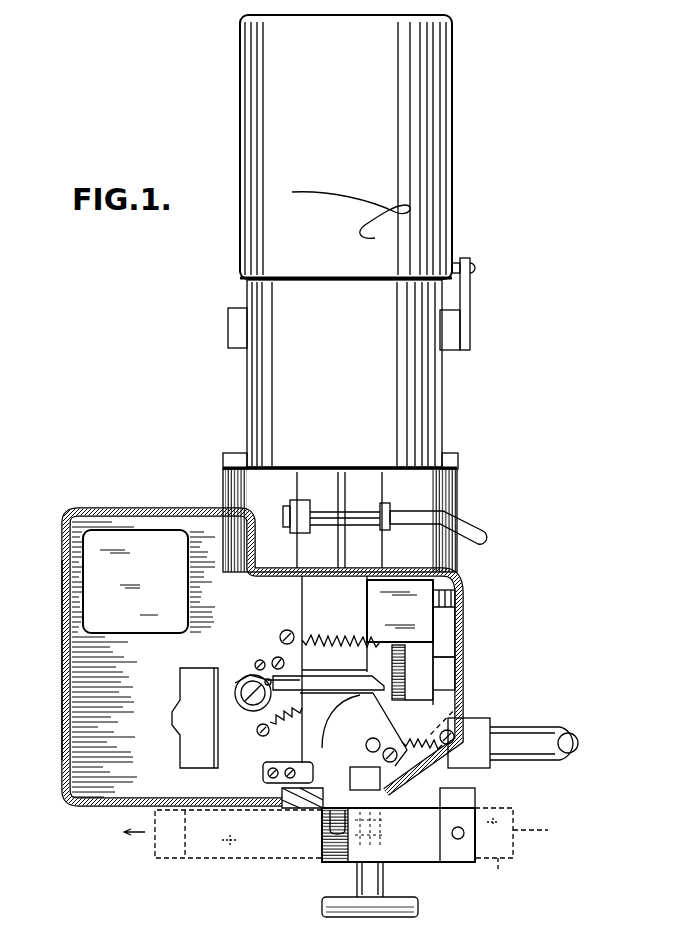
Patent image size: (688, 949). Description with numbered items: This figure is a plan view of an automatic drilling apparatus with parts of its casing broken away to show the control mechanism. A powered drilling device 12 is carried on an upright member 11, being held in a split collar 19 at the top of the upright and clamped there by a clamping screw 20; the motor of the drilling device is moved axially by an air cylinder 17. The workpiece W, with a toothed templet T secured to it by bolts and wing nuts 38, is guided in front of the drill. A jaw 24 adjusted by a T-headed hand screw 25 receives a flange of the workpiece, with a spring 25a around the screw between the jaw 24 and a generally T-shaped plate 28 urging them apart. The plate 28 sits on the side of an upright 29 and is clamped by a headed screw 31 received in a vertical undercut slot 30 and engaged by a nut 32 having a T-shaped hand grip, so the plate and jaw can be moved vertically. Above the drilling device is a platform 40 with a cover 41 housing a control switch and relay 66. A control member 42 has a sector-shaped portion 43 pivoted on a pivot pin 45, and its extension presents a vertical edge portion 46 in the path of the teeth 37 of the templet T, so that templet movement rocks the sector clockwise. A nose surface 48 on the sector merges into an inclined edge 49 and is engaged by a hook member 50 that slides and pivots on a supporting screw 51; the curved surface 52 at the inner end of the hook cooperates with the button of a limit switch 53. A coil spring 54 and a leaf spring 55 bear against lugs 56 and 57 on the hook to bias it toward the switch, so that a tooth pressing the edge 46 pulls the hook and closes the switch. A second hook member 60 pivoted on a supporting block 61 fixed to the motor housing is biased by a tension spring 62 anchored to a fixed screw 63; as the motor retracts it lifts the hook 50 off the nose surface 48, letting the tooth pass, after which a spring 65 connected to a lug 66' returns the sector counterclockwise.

The upright member 11 is at (457, 490).
The powered drilling device 12 is at (234, 393).
The air cylinder 17 is at (350, 194).
The split collar 19 is at (360, 472).
The clamping screw 20 is at (487, 517).
The jaw 24 is at (338, 862).
The T-headed hand screw 25 is at (402, 912).
The spring 25a is at (385, 848).
The T-shaped plate 28 is at (436, 795).
The upright 29 is at (373, 783).
The undercut slot 30 is at (415, 778).
The headed screw 31 is at (460, 690).
The nut 32 is at (552, 735).
The teeth 37 is at (488, 800).
The bolts and wing nuts 38 is at (210, 938).
The platform 40 is at (162, 680).
The cover 41 is at (63, 720).
The control member 42 is at (423, 703).
The sector-shaped portion 43 is at (288, 762).
The pivot pin 45 is at (360, 723).
The vertical edge portion 46 is at (330, 826).
The nose surface 48 is at (412, 672).
The inclined edge 49 is at (419, 671).
The hook member 50 is at (318, 680).
The supporting screw 51 is at (245, 710).
The curved surface 52 is at (235, 683).
The limit switch 53 is at (186, 737).
The coil spring 54 is at (270, 730).
The leaf spring 55 is at (260, 660).
The screw or lug 56 is at (345, 680).
The screw or lug 57 is at (260, 672).
The second hook member 60 is at (402, 660).
The supporting block 61 is at (380, 606).
The tension spring 62 is at (331, 639).
The fixed screw 63 is at (286, 630).
The spring 65 is at (302, 748).
The control switch and relay 66 is at (135, 552).
The screw or lug 66' is at (459, 719).
The workpiece W is at (348, 834).
The templet T is at (500, 874).